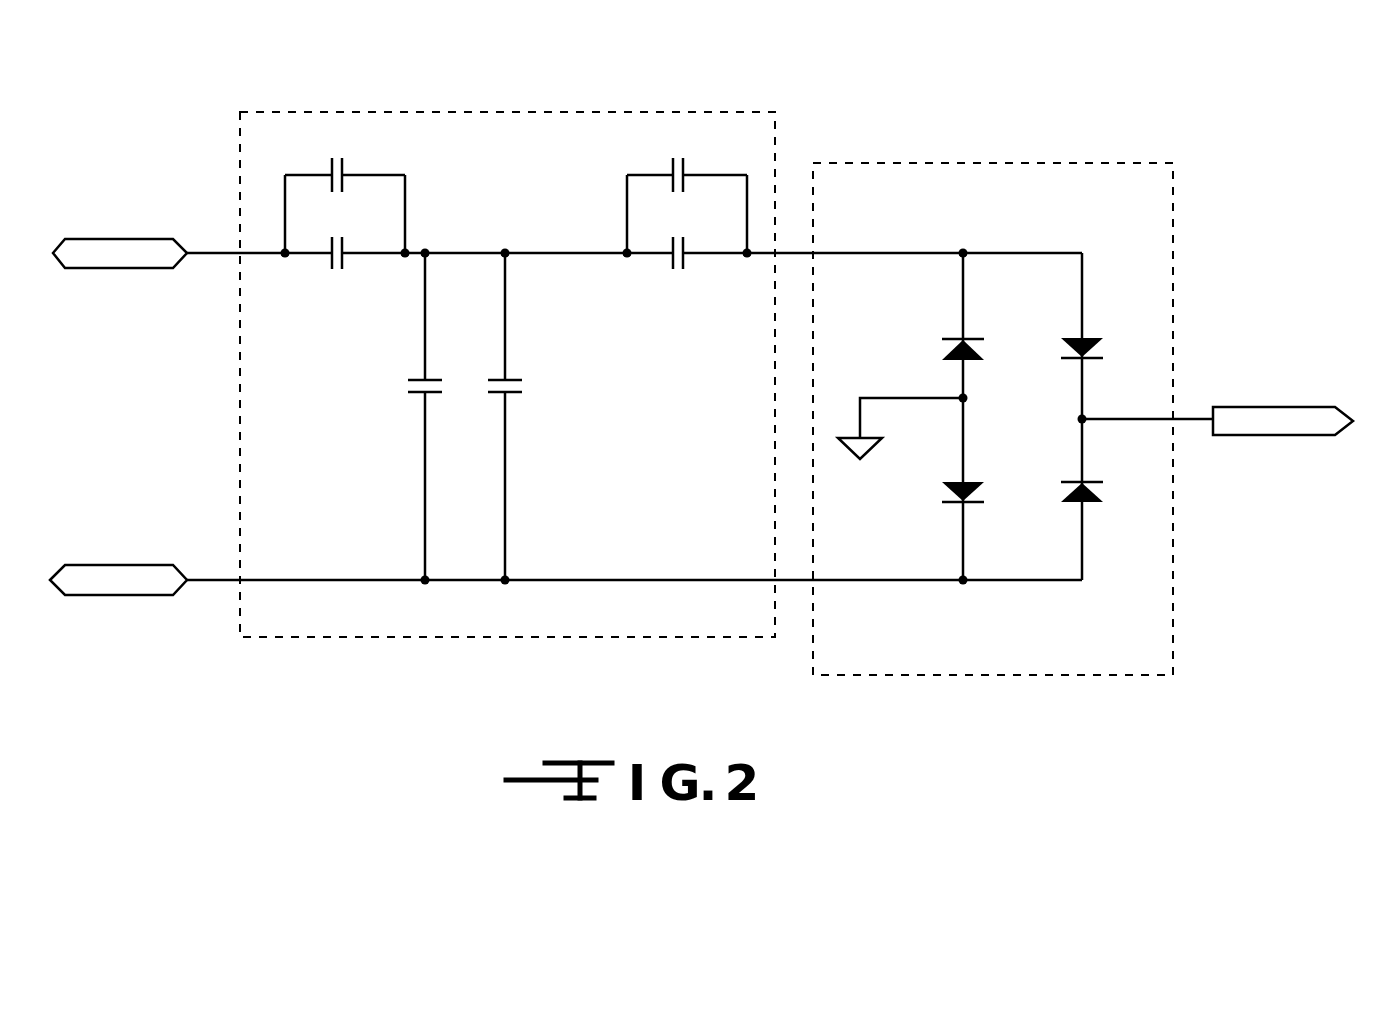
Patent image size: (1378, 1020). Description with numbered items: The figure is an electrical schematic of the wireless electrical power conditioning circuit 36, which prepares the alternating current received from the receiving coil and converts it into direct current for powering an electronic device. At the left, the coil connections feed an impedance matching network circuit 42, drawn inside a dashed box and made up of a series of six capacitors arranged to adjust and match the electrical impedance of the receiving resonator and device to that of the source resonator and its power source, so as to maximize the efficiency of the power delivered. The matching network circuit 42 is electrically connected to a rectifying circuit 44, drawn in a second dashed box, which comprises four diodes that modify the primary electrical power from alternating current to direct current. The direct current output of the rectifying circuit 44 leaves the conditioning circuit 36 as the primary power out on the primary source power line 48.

The wireless electrical power conditioning circuit 36 is at (862, 110).
The impedance matching network circuit 42 is at (662, 112).
The rectifying circuit 44 is at (1173, 225).
The primary source power line 48 is at (1195, 419).